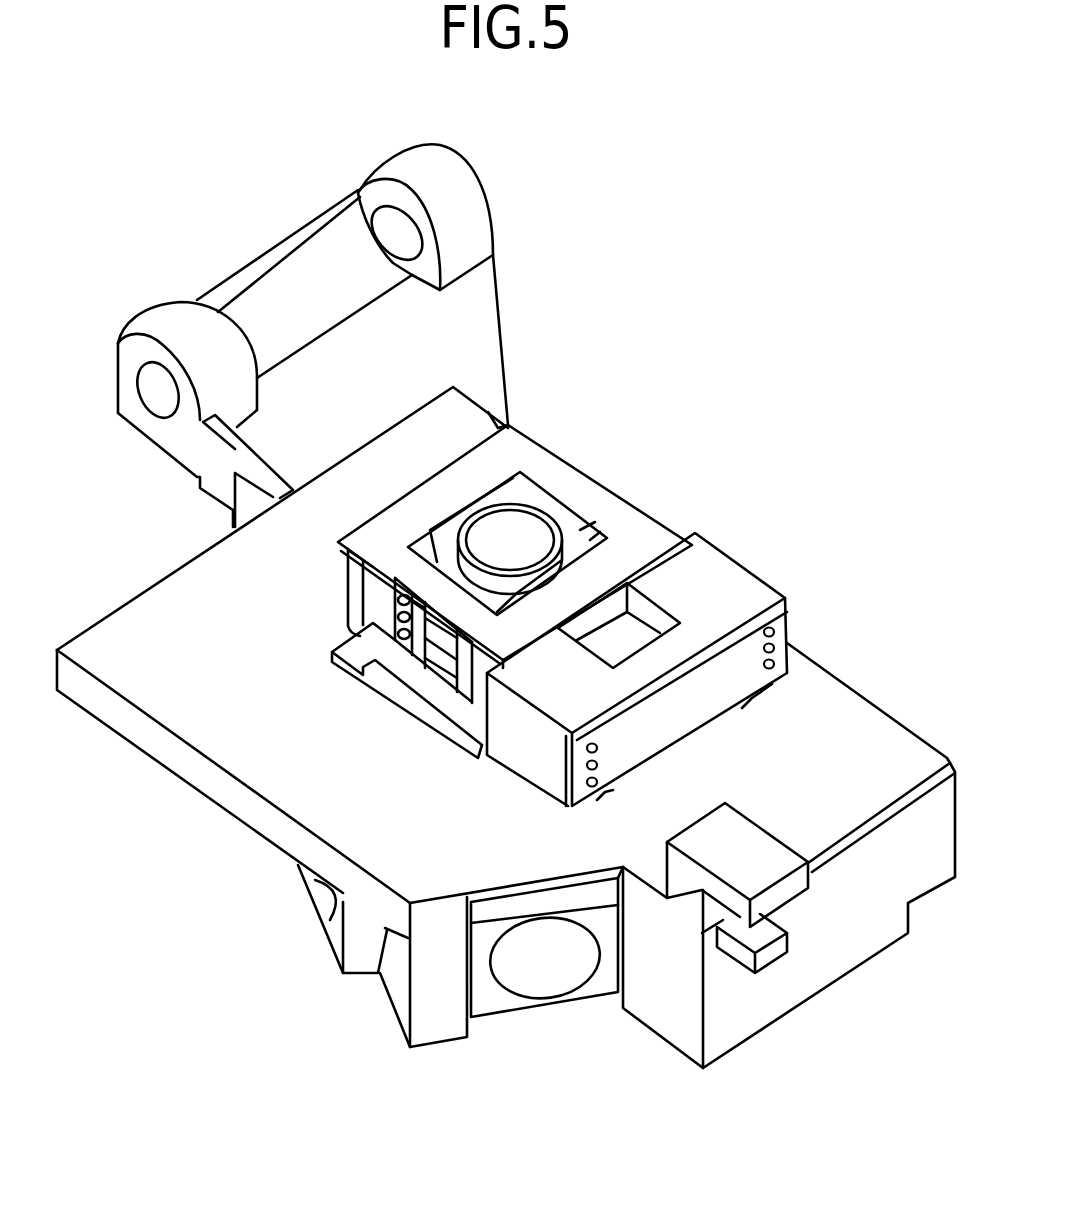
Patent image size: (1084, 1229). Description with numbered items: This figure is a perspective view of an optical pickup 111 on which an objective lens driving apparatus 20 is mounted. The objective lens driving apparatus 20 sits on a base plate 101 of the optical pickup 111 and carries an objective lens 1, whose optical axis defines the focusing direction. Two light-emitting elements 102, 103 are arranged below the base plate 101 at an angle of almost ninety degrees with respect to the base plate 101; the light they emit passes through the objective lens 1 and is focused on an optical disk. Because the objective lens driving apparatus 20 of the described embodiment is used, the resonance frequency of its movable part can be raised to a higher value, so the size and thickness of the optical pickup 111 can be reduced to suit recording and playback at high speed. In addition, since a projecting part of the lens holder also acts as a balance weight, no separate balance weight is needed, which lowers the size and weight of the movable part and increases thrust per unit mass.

The objective lens 1 is at (520, 532).
The objective lens driving apparatus 20 is at (585, 503).
The base plate 101 is at (232, 730).
The light-emitting element 102 is at (545, 970).
The light-emitting element 103 is at (313, 883).
The optical pickup 111 is at (690, 230).